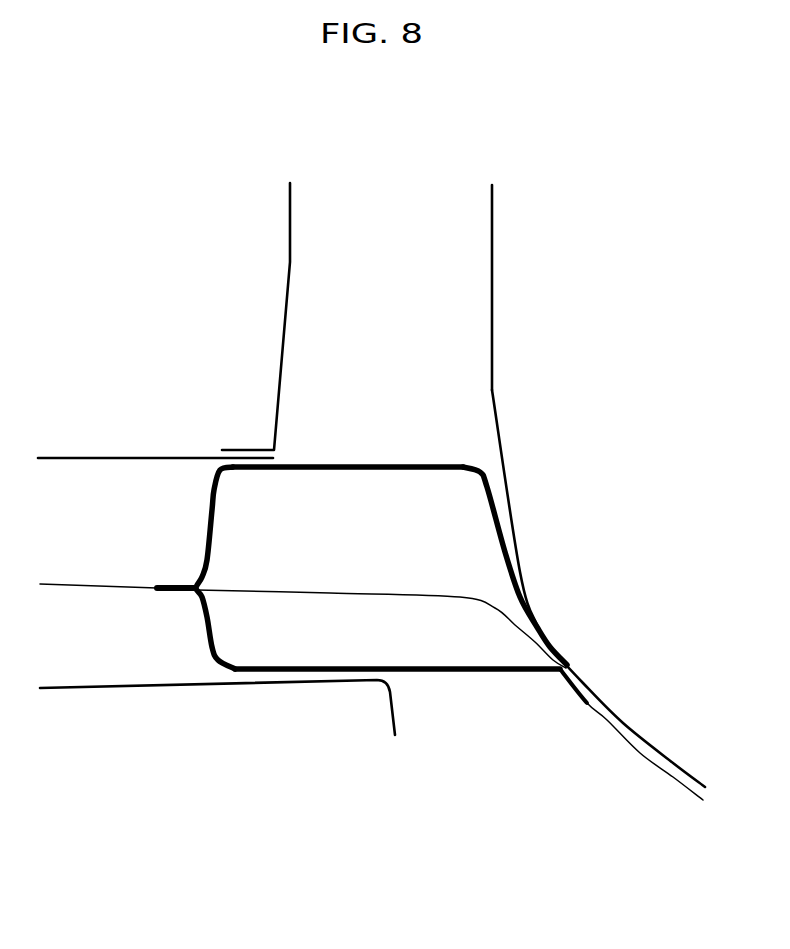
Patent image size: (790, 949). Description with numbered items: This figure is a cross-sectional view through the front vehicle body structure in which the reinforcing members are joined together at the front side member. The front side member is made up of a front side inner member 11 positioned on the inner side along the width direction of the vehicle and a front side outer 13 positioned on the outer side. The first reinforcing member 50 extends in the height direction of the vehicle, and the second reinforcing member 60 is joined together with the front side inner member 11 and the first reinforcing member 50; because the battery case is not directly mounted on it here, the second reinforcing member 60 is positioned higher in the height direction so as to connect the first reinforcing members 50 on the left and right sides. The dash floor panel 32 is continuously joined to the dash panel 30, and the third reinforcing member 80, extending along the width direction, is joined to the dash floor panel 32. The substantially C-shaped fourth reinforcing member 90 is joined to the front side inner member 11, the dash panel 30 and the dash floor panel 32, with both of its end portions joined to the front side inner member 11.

The front side inner member 11 is at (290, 259).
The front side outer 13 is at (493, 287).
The dash panel 30 is at (360, 592).
The dash floor panel 32 is at (623, 737).
The first reinforcing member 50 is at (348, 464).
The second reinforcing member 60 is at (112, 457).
The third reinforcing member 80 is at (162, 686).
The fourth reinforcing member 90 is at (475, 674).